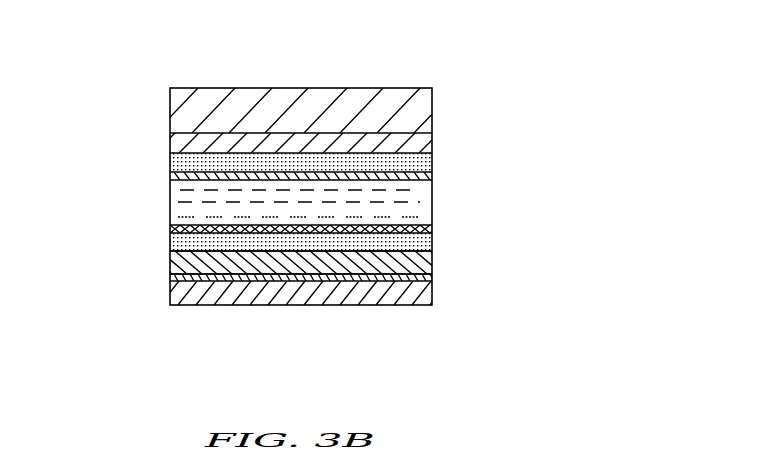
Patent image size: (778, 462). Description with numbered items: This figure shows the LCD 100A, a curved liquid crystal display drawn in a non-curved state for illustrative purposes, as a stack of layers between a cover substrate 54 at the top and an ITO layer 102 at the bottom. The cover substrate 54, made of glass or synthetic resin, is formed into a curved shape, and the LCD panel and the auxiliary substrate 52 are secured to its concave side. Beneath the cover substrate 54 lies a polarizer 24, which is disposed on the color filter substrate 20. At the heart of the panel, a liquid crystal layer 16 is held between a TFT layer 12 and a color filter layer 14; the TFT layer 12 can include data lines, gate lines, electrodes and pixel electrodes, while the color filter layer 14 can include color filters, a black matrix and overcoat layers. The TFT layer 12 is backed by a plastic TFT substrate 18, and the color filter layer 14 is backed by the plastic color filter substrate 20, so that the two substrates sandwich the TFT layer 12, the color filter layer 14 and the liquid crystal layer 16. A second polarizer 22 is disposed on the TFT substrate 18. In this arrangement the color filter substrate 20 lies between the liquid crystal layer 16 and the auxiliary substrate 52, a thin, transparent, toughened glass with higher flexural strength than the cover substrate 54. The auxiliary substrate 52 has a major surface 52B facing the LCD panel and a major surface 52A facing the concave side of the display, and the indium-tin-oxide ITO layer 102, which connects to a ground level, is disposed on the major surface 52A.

The LCD 100A is at (604, 78).
The cover substrate 54 is at (198, 110).
The polarizer 24 is at (432, 143).
The TFT substrate 18 is at (432, 163).
The TFT layer 12 is at (170, 172).
The liquid crystal layer 16 is at (420, 202).
The color filter layer 14 is at (432, 228).
The color filter substrate 20 is at (424, 243).
The auxiliary substrate 52 is at (432, 263).
The major surface 52A is at (172, 288).
The major surface 52B is at (174, 241).
The ITO layer 102 is at (433, 282).
The polarizer 22 is at (318, 305).